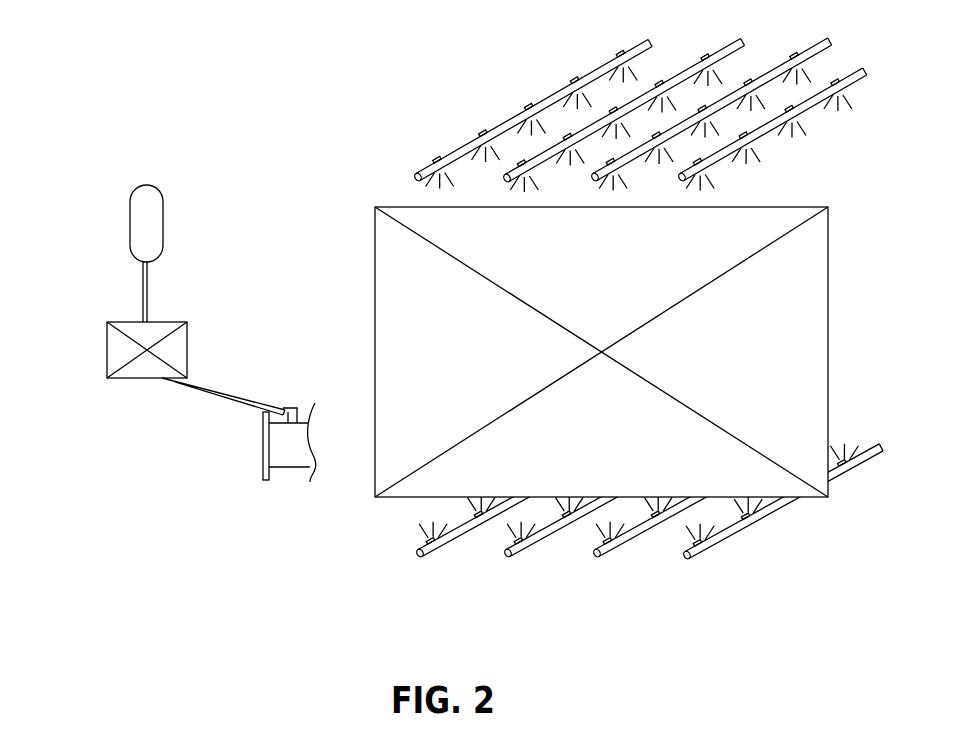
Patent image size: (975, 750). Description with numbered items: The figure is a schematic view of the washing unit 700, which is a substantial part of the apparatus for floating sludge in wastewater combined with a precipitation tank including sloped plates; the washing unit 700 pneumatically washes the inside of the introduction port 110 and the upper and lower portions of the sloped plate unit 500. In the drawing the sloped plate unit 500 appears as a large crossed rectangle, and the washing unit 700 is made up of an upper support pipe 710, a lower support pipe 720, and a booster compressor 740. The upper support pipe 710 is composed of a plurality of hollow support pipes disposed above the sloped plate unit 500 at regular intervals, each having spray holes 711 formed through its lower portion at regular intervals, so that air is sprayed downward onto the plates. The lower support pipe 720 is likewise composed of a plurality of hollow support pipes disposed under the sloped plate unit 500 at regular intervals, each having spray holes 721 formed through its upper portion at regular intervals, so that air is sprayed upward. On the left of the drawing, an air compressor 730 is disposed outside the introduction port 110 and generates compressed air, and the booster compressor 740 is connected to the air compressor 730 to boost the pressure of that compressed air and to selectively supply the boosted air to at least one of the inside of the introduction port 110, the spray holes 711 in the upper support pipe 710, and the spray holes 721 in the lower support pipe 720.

The introduction port 110 is at (290, 460).
The sloped plate unit 500 is at (401, 195).
The washing unit 700 is at (150, 258).
The upper support pipe 710 is at (538, 107).
The spray holes 711 is at (440, 178).
The lower support pipe 720 is at (458, 538).
The spray holes 721 is at (428, 543).
The air compressor 730 is at (153, 196).
The booster compressor 740 is at (128, 323).